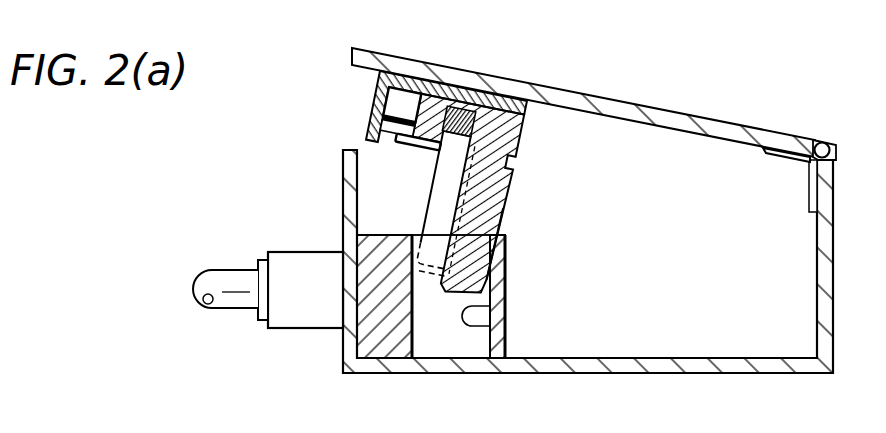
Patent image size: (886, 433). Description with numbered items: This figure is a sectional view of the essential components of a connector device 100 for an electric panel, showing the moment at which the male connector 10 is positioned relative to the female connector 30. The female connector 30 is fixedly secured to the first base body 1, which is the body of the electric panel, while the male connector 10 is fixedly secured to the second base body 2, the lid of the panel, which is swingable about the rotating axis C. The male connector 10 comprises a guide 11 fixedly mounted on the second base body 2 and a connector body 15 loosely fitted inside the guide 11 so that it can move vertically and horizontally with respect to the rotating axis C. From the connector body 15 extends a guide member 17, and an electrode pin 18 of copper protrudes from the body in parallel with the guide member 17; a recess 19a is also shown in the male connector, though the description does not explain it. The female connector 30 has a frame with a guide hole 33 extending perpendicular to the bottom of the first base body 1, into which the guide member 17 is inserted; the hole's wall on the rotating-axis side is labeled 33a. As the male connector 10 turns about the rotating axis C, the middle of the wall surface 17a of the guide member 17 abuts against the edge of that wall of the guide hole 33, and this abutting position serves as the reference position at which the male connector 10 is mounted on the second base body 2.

The first base body 1 is at (630, 365).
The second base body 2 is at (678, 118).
The rotating axis C is at (831, 142).
The lock mechanism 100 is at (240, 202).
The male connector 10 is at (350, 128).
The guide 11 is at (376, 104).
The connector body 15 is at (513, 110).
The guide member 17 is at (489, 184).
The wall surface 17a is at (493, 226).
The electrode pin 18 is at (442, 219).
The recess 19a is at (405, 108).
The female connector 30 is at (420, 284).
The guide hole 33 is at (450, 347).
The engaging hook 33a is at (491, 327).